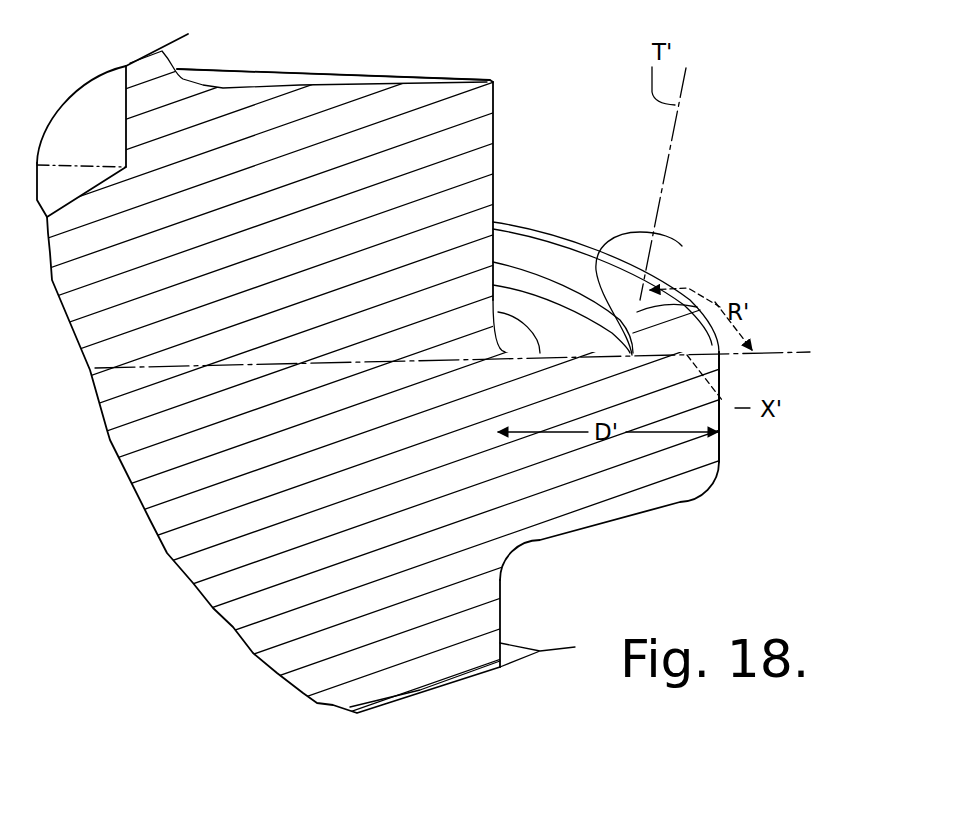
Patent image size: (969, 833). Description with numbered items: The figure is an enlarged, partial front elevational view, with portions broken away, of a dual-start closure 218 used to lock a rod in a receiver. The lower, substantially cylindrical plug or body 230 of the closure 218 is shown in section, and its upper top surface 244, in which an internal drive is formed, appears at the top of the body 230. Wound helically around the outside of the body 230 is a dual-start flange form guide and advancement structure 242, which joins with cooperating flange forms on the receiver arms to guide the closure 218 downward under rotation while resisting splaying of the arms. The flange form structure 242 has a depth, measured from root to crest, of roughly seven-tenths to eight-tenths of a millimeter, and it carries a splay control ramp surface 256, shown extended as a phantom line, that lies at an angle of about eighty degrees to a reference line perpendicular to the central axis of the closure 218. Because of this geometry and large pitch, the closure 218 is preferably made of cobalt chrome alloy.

The two-start closure 218 is at (468, 56).
The top surface 244 is at (397, 80).
The body 230 is at (493, 132).
The splay control ramp surface 256 is at (660, 232).
The flange form guide and advancement structure 242 is at (720, 445).